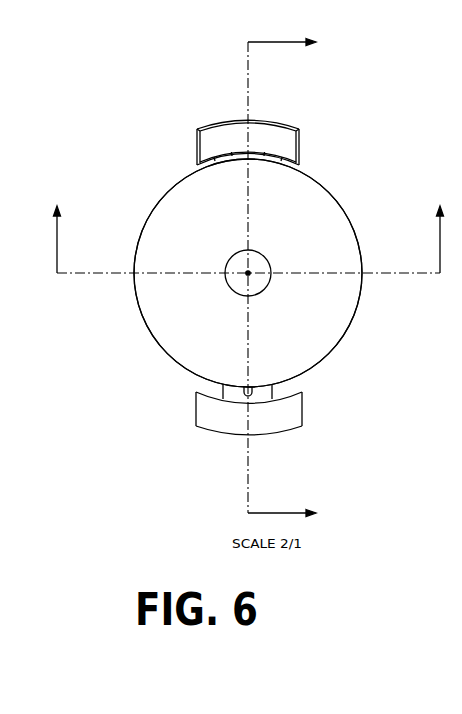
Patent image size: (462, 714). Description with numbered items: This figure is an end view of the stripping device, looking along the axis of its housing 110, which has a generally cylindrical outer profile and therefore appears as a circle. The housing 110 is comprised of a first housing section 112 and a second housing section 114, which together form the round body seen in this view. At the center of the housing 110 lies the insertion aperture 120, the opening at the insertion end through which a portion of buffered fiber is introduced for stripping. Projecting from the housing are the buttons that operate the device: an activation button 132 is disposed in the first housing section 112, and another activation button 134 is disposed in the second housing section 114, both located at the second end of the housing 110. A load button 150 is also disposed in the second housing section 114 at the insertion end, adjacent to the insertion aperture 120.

The housing 110 is at (243, 273).
The first housing section 112 is at (313, 357).
The second housing section 114 is at (314, 198).
The insertion aperture 120 is at (212, 298).
The activation button 132 is at (196, 424).
The activation button 134 is at (231, 101).
The load button 150 is at (211, 95).